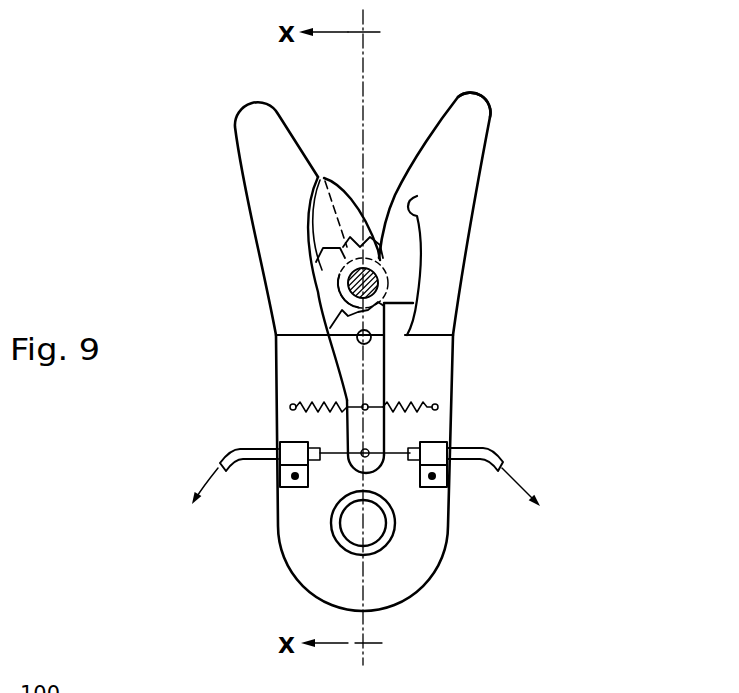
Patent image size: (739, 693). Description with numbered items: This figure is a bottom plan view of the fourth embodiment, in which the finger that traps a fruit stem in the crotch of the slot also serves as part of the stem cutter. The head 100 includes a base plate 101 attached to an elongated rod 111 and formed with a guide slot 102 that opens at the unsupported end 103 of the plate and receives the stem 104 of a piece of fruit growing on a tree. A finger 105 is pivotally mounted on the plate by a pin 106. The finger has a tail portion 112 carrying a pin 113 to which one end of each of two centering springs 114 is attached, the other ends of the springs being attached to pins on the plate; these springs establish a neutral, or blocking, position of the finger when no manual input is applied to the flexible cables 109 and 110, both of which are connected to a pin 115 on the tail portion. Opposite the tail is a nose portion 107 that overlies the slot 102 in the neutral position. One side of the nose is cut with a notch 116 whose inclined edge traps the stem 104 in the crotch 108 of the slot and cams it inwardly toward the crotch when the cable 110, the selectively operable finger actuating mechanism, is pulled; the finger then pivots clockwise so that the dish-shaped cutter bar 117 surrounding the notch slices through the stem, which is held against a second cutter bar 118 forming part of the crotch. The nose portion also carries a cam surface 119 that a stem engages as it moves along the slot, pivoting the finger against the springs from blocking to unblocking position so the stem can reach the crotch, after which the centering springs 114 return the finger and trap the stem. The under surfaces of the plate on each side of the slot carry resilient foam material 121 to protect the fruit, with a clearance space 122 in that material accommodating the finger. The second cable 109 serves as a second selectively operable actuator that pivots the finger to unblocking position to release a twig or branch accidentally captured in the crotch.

The head 100 is at (494, 148).
The base plate 101 is at (440, 355).
The guide slot 102 is at (309, 160).
The unsupported end 103 is at (456, 100).
The stem 104 is at (380, 281).
The finger 105 is at (355, 366).
The pin 106 is at (357, 338).
The nose portion 107 is at (332, 178).
The crotch 108 is at (386, 289).
The flexible cable (second finger actuator) 109 is at (509, 452).
The flexible cable (finger actuating mechanism) 110 is at (216, 453).
The elongated rod 111 is at (393, 533).
The tail portion 112 is at (357, 433).
The pin 113 is at (370, 402).
The centering springs 114 is at (332, 390).
The pin 115 is at (360, 458).
The notch 116 is at (388, 276).
The cutter bar 117 is at (350, 287).
The cutter bar 118 is at (388, 296).
The cam surface 119 is at (350, 188).
The resilient foam material 121 is at (258, 176).
The clearance space 122 is at (419, 212).